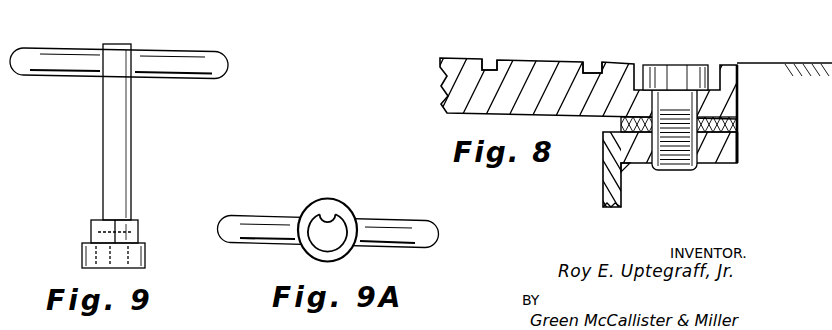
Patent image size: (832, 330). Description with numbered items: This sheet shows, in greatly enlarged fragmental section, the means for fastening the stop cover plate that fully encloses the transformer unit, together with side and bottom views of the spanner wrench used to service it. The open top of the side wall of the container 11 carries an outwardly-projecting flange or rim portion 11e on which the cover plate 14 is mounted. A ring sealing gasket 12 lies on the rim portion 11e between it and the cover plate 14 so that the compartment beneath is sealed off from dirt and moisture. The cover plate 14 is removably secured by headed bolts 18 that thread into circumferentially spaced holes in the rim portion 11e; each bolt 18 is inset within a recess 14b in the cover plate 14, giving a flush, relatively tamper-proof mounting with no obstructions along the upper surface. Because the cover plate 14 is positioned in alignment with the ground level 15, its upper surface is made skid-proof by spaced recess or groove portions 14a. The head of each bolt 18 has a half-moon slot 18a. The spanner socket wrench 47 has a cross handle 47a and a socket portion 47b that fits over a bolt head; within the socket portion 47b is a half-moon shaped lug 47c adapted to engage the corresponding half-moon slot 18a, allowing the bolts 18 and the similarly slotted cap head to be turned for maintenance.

In FIG. 8, the container 11 is at (673, 170).
In FIG. 8, the flange or rim portion 11e is at (736, 162).
In FIG. 8, the ring sealing gasket 12 is at (736, 128).
In FIG. 8, the cover plate 14 is at (584, 93).
In FIG. 8, the recess or groove portions 14a is at (488, 60).
In FIG. 8, the recesses 14b is at (635, 62).
In FIG. 8, the ground level 15 is at (786, 62).
In FIG. 8, the headed bolts 18 is at (679, 94).
In FIG. 8, the half-moon slot 18a is at (680, 70).
In FIG. 9, the spanner socket wrench 47 is at (119, 150).
In FIG. 9A, the spanner socket wrench 47 is at (334, 216).
In FIG. 9, the cross handle 47a is at (173, 54).
In FIG. 9A, the cross handle 47a is at (255, 217).
In FIG. 9, the socket portion 47b is at (100, 269).
In FIG. 9A, the socket portion 47b is at (318, 241).
In FIG. 9, the half-moon shaped lug 47c is at (125, 269).
In FIG. 9A, the half-moon shaped lug 47c is at (327, 221).